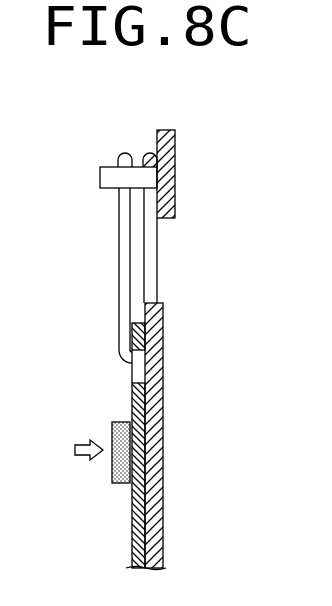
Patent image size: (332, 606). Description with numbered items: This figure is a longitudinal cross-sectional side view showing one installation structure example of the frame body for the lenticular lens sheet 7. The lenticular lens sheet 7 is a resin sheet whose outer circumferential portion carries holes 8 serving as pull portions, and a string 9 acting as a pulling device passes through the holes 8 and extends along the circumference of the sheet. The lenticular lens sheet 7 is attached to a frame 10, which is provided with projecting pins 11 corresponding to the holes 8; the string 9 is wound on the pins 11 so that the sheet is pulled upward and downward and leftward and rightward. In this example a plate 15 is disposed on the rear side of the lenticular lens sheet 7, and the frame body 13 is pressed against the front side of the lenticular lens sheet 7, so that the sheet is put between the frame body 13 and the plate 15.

The lenticular lens sheet 7 is at (138, 532).
The hole 8 is at (132, 375).
The string 9 is at (120, 265).
The frame 10 is at (165, 178).
The pin 11 is at (113, 176).
The frame body 13 is at (112, 467).
The plate 15 is at (153, 472).